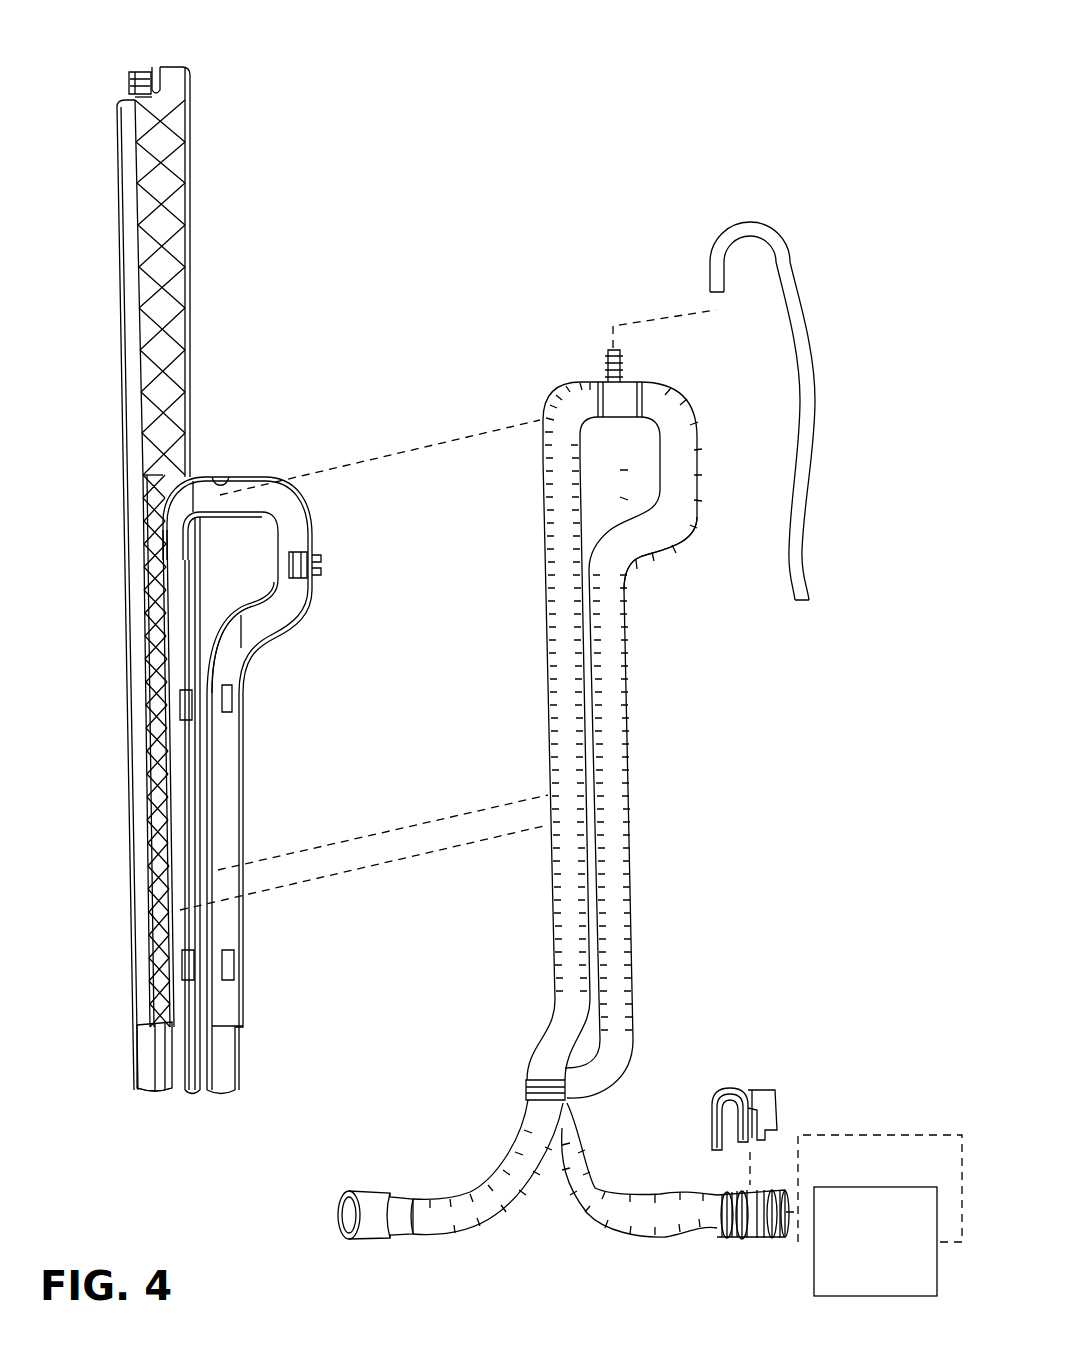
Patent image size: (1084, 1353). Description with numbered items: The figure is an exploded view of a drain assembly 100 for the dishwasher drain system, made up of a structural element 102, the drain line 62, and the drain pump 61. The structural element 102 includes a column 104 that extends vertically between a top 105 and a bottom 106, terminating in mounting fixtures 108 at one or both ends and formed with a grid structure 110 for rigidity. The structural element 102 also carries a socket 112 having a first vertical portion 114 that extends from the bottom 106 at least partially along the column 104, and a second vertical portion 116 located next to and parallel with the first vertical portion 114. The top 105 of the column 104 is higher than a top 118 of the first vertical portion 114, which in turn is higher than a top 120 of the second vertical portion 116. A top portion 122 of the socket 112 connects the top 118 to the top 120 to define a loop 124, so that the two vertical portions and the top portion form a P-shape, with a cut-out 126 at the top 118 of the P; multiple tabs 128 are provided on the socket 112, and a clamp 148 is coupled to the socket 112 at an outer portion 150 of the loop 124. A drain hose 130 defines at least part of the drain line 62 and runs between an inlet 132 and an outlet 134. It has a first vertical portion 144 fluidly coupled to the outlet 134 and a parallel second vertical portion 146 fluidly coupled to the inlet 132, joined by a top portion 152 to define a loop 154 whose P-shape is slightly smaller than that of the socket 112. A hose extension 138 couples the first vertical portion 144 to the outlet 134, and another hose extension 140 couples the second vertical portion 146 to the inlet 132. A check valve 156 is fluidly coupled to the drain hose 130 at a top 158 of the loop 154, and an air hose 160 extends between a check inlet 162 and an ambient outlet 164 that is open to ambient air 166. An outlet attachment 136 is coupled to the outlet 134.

The drain assembly 100 is at (818, 32).
The structural element 102 is at (210, 113).
The column 104 is at (143, 616).
The top 105 is at (160, 68).
The bottom 106 is at (175, 1095).
The mounting fixtures 108 is at (134, 78).
The grid structure 110 is at (163, 233).
The socket 112 is at (180, 870).
The first vertical portion 114 is at (180, 760).
The second vertical portion 116 is at (222, 745).
The top 118 is at (200, 475).
The top 120 is at (220, 642).
The top portion 122 is at (282, 516).
The loop 124 is at (252, 482).
The cut-out 126 is at (224, 480).
The tabs 128 is at (232, 968).
The drain hose 130 is at (568, 778).
The inlet 132 is at (785, 1242).
The outlet 134 is at (345, 1213).
The outlet attachment 136 is at (738, 1085).
The hose extension 138 is at (470, 1205).
The hose extension 140 is at (628, 1220).
The first vertical portion 144 is at (572, 920).
The second vertical portion 146 is at (620, 890).
The clamp 148 is at (318, 556).
The outer portion 150 is at (318, 590).
The top portion 152 is at (680, 530).
The loop 154 is at (699, 409).
The check valve 156 is at (606, 362).
The top 158 is at (620, 400).
The air hose 160 is at (793, 282).
The check inlet 162 is at (712, 305).
The ambient outlet 164 is at (803, 600).
The ambient air 166 is at (840, 676).
The drain pump 61 is at (863, 1235).
The drain line 62 is at (630, 737).